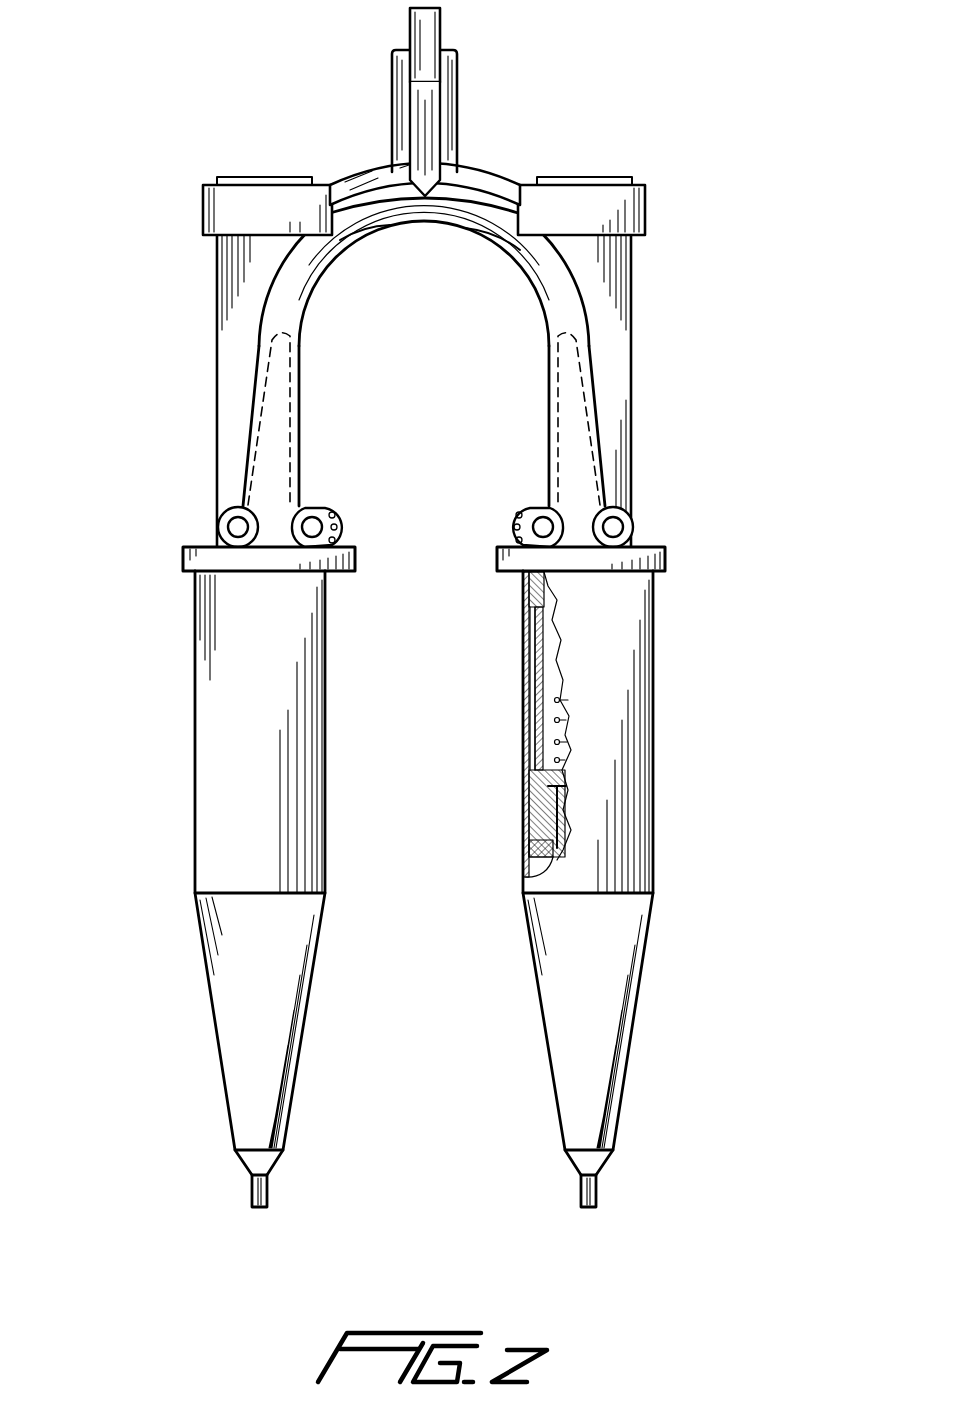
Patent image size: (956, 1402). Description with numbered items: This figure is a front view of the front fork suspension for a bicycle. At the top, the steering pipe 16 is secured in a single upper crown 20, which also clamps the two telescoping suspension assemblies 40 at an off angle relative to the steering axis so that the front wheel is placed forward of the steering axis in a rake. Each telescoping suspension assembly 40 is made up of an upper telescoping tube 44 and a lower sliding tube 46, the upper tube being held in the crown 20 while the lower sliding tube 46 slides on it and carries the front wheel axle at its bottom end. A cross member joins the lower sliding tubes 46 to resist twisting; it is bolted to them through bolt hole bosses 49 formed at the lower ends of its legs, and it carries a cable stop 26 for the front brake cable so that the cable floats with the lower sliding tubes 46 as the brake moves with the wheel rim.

The steering pipe 16 is at (458, 102).
The cable stop 26 is at (400, 158).
The upper crown 20 is at (648, 217).
The upper telescoping tube 44 is at (233, 326).
The bolt hole boss 49 is at (202, 511).
The telescoping suspension assembly 40 is at (181, 583).
The lower sliding tube 46 is at (212, 783).